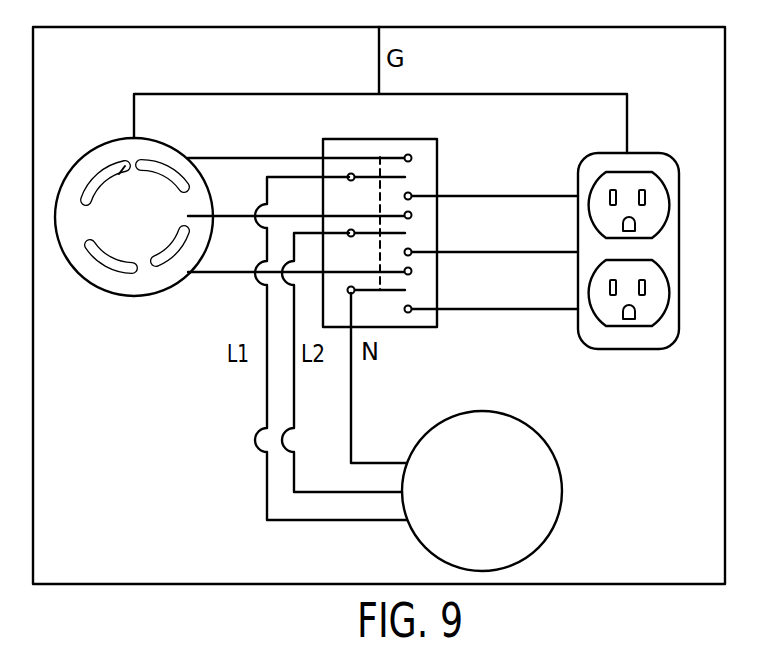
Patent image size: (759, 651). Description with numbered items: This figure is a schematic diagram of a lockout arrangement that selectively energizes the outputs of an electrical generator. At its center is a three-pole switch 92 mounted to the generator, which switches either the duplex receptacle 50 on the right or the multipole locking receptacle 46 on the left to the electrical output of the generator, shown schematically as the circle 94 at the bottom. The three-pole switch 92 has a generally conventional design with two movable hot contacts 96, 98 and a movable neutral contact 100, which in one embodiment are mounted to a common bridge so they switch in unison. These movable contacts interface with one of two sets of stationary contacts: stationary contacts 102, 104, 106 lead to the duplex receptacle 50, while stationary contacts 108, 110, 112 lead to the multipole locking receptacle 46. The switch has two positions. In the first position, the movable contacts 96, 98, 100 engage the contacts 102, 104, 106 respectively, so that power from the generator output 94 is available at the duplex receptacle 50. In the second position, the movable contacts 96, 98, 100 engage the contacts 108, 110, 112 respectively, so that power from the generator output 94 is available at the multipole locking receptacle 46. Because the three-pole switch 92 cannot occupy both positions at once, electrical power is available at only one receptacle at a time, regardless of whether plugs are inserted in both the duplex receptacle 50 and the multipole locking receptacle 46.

The multipole locking receptacle 46 is at (133, 298).
The duplex receptacle 50 is at (657, 152).
The three-pole switch 92 is at (353, 139).
The electrical output of the generator 94 is at (495, 505).
The movable hot contact 96 is at (401, 176).
The movable hot contact 98 is at (401, 234).
The neutral contact 100 is at (399, 290).
The stationary contact 102 is at (411, 199).
The stationary contact 104 is at (411, 255).
The stationary contact 106 is at (409, 313).
The stationary contact 108 is at (409, 155).
The stationary contact 110 is at (407, 212).
The stationary contact 112 is at (407, 268).